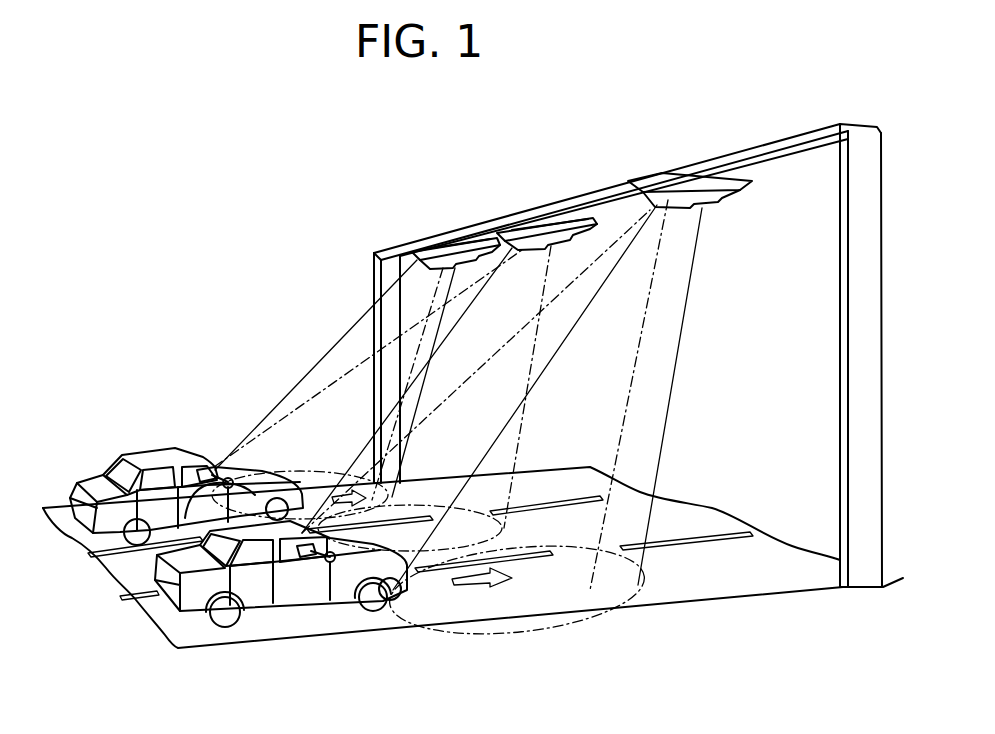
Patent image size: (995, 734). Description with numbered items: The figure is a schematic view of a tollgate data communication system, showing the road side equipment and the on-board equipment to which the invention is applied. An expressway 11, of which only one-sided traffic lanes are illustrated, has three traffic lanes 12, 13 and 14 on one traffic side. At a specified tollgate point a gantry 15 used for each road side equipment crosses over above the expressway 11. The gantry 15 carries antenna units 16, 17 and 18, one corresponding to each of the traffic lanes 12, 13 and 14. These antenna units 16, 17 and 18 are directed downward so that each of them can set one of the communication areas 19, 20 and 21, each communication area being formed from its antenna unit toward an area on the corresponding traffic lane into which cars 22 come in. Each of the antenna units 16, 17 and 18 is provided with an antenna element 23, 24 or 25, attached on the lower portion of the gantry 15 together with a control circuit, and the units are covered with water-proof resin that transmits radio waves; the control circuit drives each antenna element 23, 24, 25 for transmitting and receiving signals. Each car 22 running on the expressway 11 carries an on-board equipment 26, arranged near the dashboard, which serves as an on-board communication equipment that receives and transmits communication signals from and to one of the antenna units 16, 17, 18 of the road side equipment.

The expressway 11 is at (153, 650).
The traffic lane 12 is at (67, 530).
The traffic lane 13 is at (107, 572).
The traffic lane 14 is at (140, 610).
The gantry 15 is at (396, 252).
The antenna unit 16 is at (458, 233).
The antenna unit 17 is at (558, 213).
The antenna unit 18 is at (701, 178).
The communication area 19 is at (293, 392).
The communication area 20 is at (544, 308).
The communication area 21 is at (686, 312).
The car 22 is at (84, 480).
The antenna element 23 is at (327, 393).
The antenna element 24 is at (434, 398).
The antenna element 25 is at (529, 422).
The on-board equipment 26 is at (212, 465).